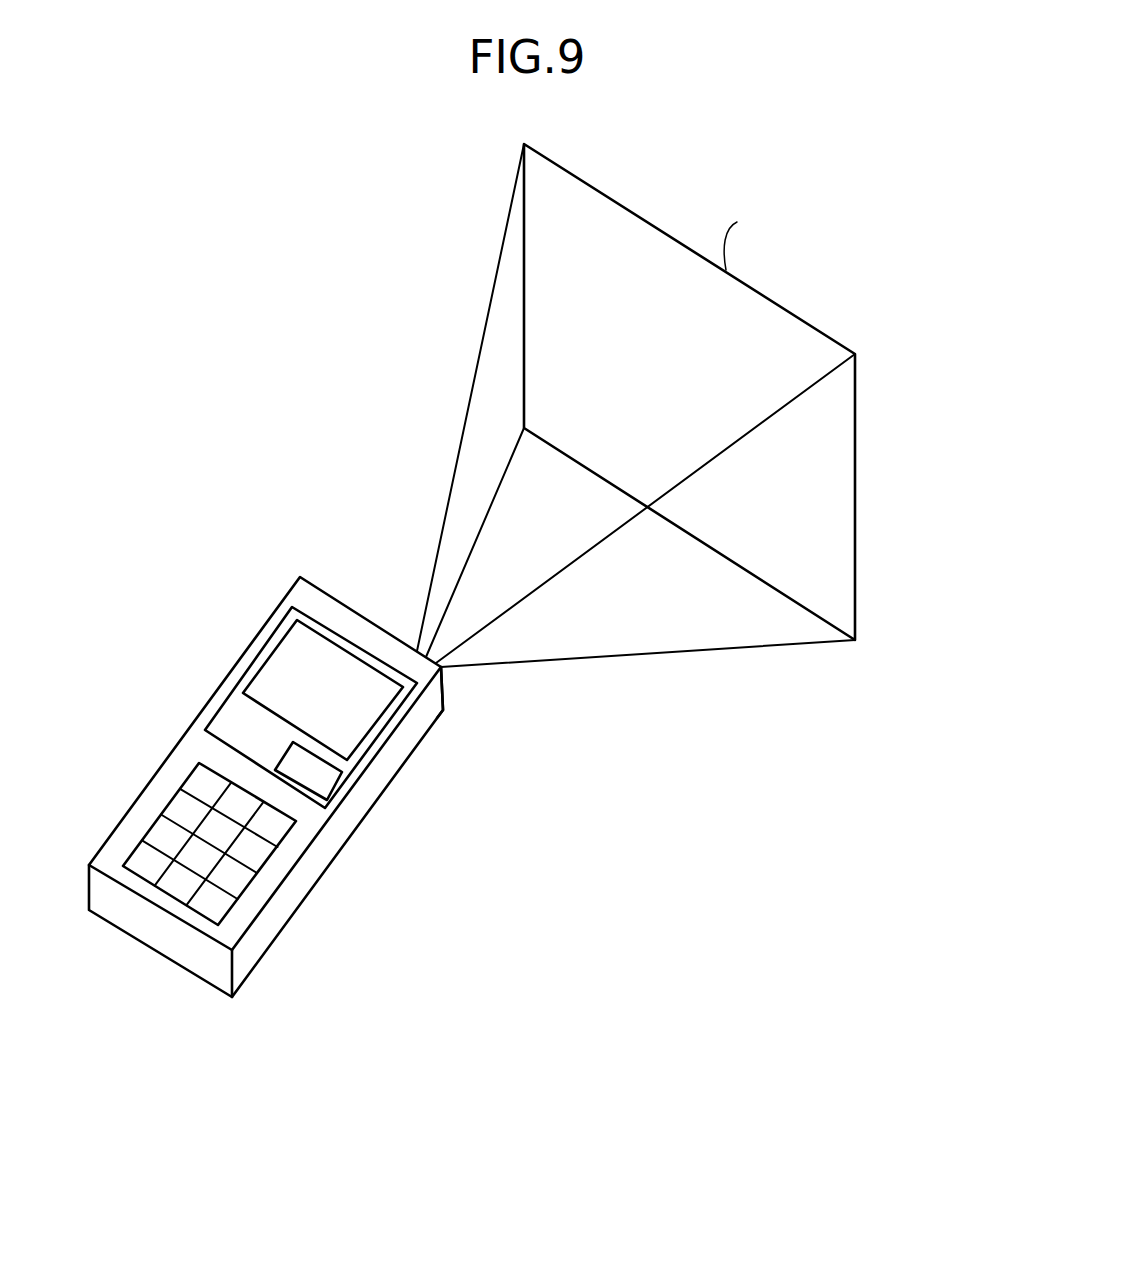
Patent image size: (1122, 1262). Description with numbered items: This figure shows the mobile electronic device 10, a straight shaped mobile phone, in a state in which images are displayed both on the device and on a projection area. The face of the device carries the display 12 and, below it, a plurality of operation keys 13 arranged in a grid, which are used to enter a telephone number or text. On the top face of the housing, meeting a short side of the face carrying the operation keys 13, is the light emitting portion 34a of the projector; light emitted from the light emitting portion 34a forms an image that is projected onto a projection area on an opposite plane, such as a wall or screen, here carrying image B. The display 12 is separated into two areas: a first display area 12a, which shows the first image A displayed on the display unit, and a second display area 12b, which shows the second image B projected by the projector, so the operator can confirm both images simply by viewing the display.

The mobile electronic device 10 is at (197, 1011).
The display 12 is at (241, 727).
The first display area 12a is at (310, 673).
The second display area 12b is at (328, 776).
The operation keys 13 is at (253, 856).
The light emitting portion 34a is at (445, 675).